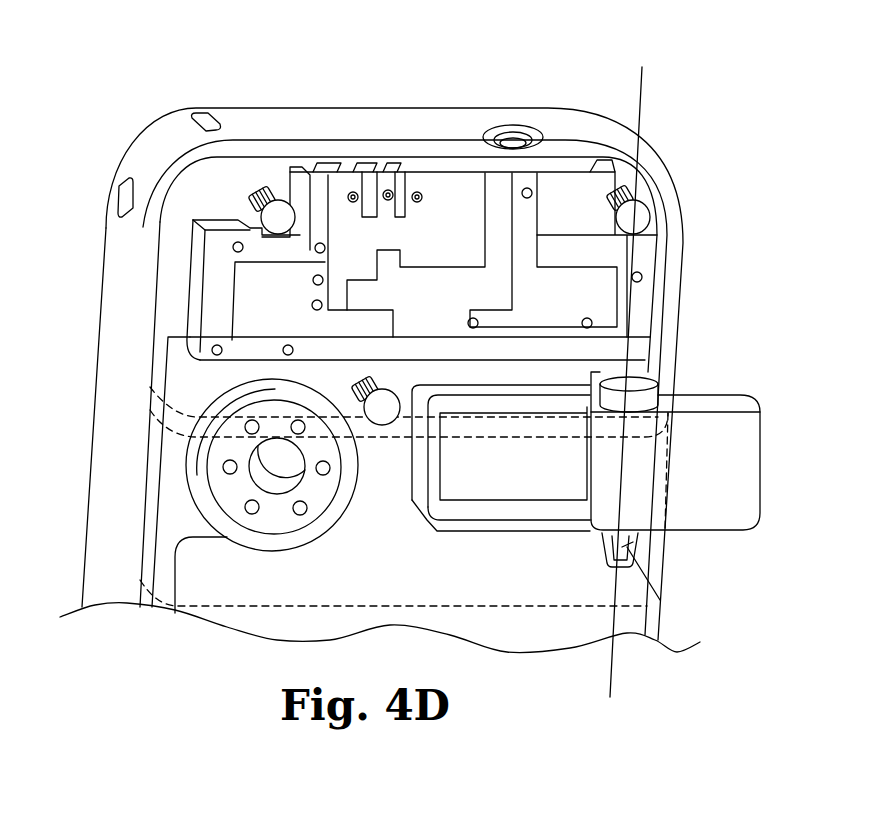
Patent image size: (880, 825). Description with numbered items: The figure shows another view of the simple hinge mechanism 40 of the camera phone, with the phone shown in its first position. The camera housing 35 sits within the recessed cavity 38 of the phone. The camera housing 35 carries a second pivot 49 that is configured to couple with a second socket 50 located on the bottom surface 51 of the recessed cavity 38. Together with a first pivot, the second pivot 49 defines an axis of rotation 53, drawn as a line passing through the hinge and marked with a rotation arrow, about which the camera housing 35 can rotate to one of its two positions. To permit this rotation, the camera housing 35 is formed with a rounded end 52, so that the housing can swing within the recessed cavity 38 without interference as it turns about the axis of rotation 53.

The camera housing 35 is at (675, 462).
The recessed cavity 38 is at (513, 453).
The simple hinge mechanism 40 is at (678, 388).
The second pivot 49 is at (645, 553).
The second socket 50 is at (668, 600).
The bottom surface 51 is at (462, 507).
The rounded end 52 is at (600, 482).
The axis of rotation 53 is at (680, 80).